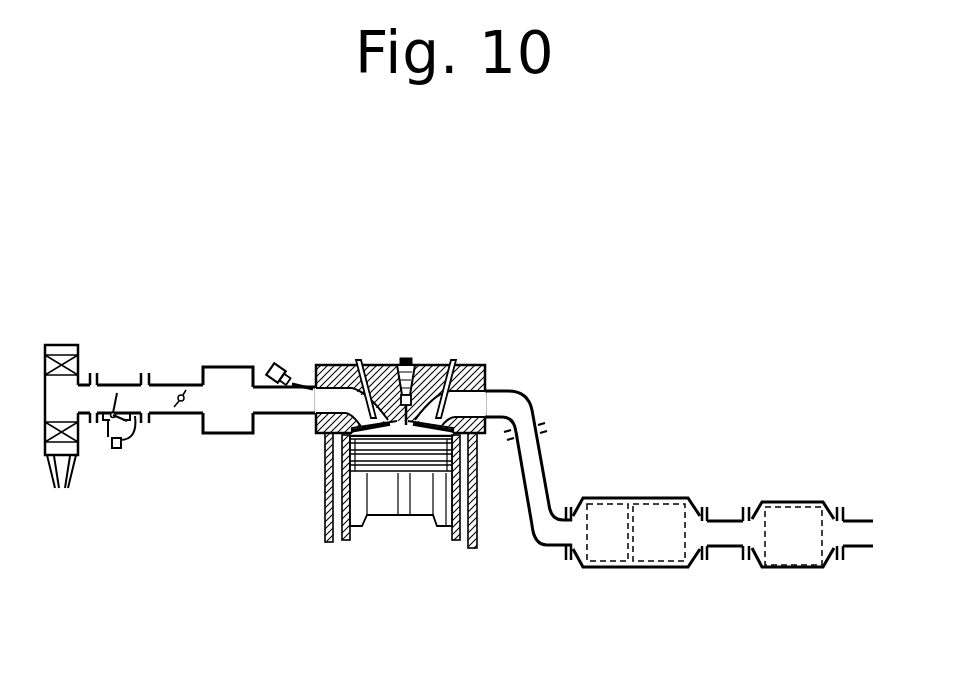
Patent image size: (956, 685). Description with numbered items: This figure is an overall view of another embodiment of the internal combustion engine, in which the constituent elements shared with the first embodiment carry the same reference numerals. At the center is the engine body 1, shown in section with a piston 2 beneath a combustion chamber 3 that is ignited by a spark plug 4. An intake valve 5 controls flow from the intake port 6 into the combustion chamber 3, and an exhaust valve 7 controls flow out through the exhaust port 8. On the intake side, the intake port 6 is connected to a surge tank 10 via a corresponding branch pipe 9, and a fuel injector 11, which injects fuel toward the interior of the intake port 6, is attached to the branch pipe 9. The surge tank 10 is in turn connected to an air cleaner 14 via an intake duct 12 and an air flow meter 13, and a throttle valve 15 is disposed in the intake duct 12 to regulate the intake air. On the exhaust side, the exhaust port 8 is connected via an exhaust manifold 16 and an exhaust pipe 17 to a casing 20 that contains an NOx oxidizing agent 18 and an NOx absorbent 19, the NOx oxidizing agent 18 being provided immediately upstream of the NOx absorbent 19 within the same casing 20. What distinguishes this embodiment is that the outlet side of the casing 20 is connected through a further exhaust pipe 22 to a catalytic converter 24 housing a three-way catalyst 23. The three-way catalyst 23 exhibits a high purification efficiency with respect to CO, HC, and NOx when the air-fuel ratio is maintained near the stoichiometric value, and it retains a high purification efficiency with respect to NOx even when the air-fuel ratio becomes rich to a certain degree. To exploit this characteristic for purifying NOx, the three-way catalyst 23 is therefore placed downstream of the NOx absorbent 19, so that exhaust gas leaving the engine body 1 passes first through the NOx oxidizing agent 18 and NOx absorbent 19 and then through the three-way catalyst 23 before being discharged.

The engine body 1 is at (433, 438).
The piston 2 is at (432, 503).
The combustion chamber 3 is at (412, 432).
The spark plug 4 is at (412, 367).
The intake valve 5 is at (355, 362).
The intake port 6 is at (337, 397).
The exhaust valve 7 is at (463, 370).
The exhaust port 8 is at (475, 403).
The branch pipe 9 is at (282, 415).
The surge tank 10 is at (232, 434).
The fuel injector 11 is at (283, 367).
The intake duct 12 is at (158, 382).
The air flow meter 13 is at (118, 383).
The air cleaner 14 is at (63, 345).
The throttle valve 15 is at (184, 394).
The exhaust manifold 16 is at (530, 396).
The exhaust pipe 17 is at (545, 465).
The NOx oxidizing agent 18 is at (605, 500).
The NOx absorbent 19 is at (660, 500).
The casing 20 is at (642, 543).
The exhaust pipe 22 is at (722, 548).
The three-way catalyst 23 is at (788, 505).
The catalytic converter 24 is at (812, 537).